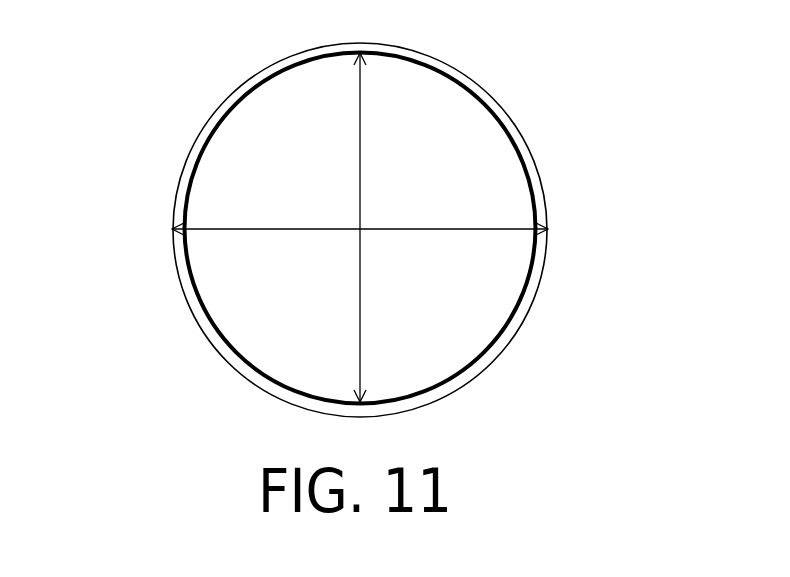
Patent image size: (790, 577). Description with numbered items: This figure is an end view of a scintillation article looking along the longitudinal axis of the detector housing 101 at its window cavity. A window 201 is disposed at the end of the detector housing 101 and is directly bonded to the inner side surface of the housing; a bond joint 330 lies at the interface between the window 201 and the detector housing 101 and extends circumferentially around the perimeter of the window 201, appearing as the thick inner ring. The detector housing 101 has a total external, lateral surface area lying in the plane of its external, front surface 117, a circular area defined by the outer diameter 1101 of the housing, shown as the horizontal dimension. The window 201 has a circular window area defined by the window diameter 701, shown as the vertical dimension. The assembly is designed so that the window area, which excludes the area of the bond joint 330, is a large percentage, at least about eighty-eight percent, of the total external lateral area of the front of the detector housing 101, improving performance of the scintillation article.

The detector housing 101 is at (437, 55).
The window 201 is at (407, 231).
The external, front surface 117 is at (428, 210).
The bond joint 330 is at (467, 367).
The window diameter 701 is at (358, 350).
The outer diameter 1101 is at (252, 228).